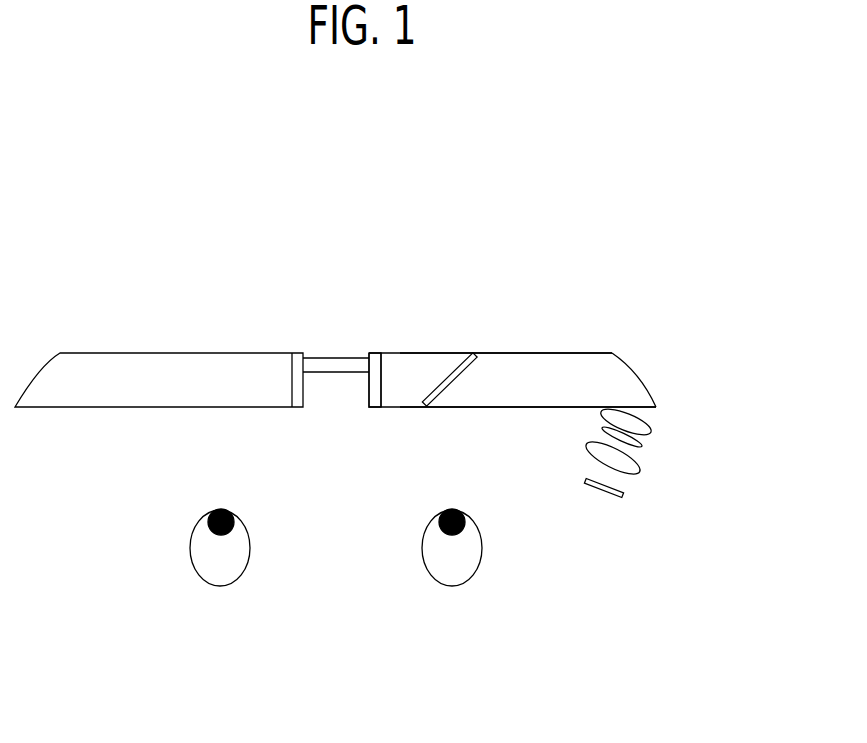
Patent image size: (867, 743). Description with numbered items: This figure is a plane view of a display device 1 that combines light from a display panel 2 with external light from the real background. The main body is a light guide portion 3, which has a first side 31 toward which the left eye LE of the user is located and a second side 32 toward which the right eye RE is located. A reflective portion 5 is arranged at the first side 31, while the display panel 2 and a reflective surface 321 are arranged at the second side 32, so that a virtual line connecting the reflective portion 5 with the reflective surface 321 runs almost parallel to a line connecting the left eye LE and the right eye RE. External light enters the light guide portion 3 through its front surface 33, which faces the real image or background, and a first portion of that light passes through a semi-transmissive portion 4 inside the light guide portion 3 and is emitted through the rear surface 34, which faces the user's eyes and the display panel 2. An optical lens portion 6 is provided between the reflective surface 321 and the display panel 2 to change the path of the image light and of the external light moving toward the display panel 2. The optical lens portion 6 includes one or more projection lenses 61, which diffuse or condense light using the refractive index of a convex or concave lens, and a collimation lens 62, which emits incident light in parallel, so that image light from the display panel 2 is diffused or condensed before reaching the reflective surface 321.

The display device 1 is at (10, 166).
The display panel 2 is at (612, 487).
The light guide portion 3 is at (637, 258).
The first side 31 is at (375, 330).
The second side 32 is at (637, 347).
The reflective surface 321 is at (641, 379).
The front surface 33 is at (526, 353).
The rear surface 34 is at (527, 408).
The semi-transmissive portion 4 is at (450, 368).
The reflective portion 5 is at (387, 383).
The optical lens portion 6 is at (705, 432).
The projection lens 61 is at (662, 420).
The collimation lens 62 is at (627, 462).
The left eye LE is at (192, 566).
The right eye RE is at (480, 568).